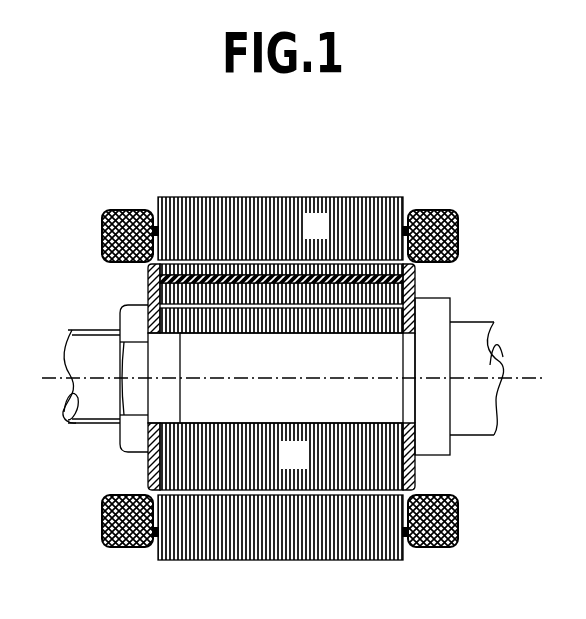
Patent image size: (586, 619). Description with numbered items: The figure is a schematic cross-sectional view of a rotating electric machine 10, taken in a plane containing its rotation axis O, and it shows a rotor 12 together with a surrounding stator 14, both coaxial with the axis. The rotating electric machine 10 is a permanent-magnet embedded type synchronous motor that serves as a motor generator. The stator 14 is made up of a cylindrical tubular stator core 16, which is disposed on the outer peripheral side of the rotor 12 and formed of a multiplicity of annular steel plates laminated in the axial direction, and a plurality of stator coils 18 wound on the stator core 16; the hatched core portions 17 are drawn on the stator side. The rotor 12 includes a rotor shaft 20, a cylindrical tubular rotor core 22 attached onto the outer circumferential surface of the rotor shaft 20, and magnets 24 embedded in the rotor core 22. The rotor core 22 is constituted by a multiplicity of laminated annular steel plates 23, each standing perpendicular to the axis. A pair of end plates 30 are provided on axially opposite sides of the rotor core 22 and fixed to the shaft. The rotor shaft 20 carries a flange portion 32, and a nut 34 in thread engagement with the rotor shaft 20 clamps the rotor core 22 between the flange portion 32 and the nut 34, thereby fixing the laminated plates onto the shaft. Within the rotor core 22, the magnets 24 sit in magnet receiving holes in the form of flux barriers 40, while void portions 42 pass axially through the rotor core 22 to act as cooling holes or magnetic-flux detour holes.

The rotating electric machine 10 is at (428, 155).
The rotor 12 is at (124, 459).
The stator 14 is at (160, 178).
The stator core 16 is at (326, 237).
The stator core teeth 17 is at (248, 537).
The stator coils 18 is at (110, 233).
The rotor shaft 20 is at (462, 335).
The rotor core 22 is at (284, 466).
The annular-shaped steel plates 23 is at (203, 457).
The magnets 24 is at (263, 279).
The end plates 30 is at (150, 294).
The flange portion 32 is at (435, 408).
The nut 34 is at (130, 323).
The flux barriers 40 is at (198, 279).
The void portions 42 is at (357, 306).